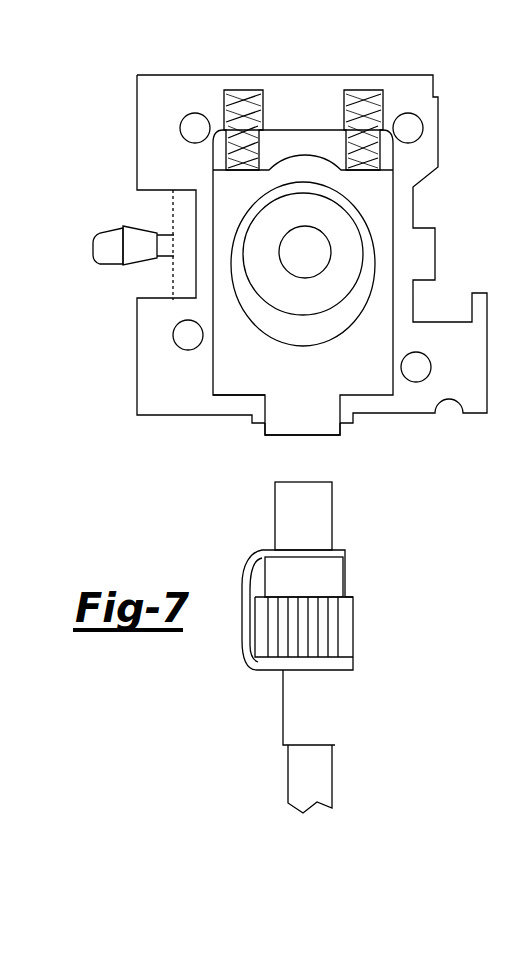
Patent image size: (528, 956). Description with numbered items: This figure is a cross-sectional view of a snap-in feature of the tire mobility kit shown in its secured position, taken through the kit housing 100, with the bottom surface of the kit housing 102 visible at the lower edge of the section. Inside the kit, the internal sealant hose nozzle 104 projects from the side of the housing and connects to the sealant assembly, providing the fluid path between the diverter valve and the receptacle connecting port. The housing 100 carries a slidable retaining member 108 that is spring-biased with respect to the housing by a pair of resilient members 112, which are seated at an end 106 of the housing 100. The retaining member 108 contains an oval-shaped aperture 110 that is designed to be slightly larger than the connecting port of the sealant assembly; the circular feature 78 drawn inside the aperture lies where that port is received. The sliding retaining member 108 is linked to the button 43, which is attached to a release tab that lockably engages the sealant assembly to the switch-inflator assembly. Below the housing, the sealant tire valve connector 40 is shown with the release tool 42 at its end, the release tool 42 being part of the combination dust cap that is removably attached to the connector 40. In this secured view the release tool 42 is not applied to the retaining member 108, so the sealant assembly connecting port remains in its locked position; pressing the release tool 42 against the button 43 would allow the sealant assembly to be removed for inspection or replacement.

The kit housing 100 is at (120, 84).
The bottom surface of the kit housing 102 is at (427, 112).
The internal sealant hose nozzle 104 is at (108, 229).
The end of housing 106 is at (240, 384).
The slidable retaining member 108 is at (292, 125).
The oval-shaped aperture 110 is at (322, 340).
The resilient member 112 is at (243, 92).
The roller 78 is at (343, 225).
The button 43 is at (320, 437).
The release tool 42 is at (323, 503).
The sealant tire valve connector 40 is at (338, 633).